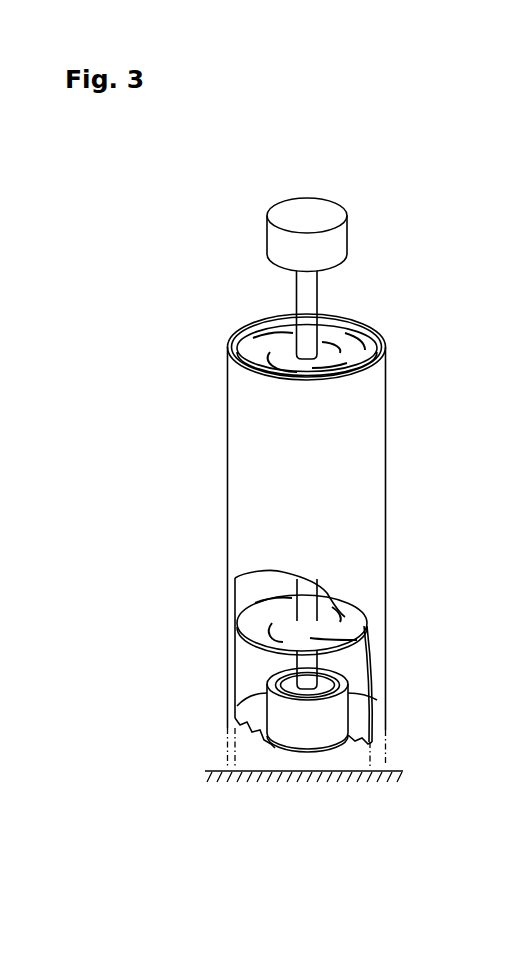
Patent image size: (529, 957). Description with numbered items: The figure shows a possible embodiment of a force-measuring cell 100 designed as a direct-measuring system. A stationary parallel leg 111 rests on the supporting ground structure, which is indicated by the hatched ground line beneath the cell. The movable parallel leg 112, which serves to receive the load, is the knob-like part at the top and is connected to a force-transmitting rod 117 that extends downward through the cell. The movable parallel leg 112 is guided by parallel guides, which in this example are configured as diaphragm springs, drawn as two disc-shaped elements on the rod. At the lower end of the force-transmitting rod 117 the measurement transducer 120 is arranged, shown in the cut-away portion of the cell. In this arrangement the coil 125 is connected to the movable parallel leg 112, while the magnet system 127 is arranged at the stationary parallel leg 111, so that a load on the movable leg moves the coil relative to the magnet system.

The force-measuring cell 100 is at (319, 125).
The stationary parallel leg 111 is at (385, 535).
The movable parallel leg 112 is at (348, 240).
The force-transmitting rod 117 is at (318, 303).
The measurement transducer 120 is at (370, 698).
The coil 125 is at (285, 687).
The magnet system 127 is at (378, 718).